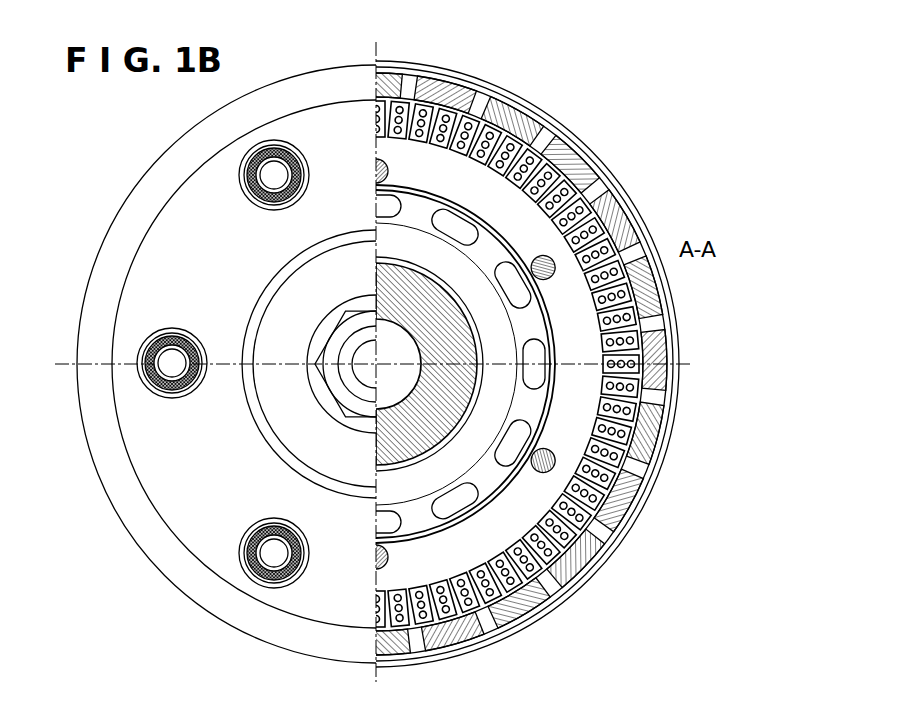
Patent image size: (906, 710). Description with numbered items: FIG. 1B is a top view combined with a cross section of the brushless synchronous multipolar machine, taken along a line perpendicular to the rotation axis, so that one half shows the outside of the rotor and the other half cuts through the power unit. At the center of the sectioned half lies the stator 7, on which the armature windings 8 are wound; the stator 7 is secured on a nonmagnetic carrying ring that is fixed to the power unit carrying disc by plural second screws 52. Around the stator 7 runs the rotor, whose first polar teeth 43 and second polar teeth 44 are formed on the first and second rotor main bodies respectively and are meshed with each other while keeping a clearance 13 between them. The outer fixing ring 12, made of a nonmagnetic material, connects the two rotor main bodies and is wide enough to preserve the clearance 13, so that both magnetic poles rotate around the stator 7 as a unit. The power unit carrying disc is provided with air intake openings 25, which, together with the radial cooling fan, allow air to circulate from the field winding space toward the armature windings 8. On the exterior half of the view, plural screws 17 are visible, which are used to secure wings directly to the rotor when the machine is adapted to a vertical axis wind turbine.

The stator 7 is at (543, 237).
The armature windings 8 is at (643, 400).
The outer fixing ring 12 is at (665, 318).
The clearance 13 is at (601, 183).
The screws 17 is at (240, 177).
The air intake openings 25 is at (453, 225).
The first polar teeth 43 is at (620, 543).
The second polar teeth 44 is at (617, 550).
The second screws 52 is at (552, 460).